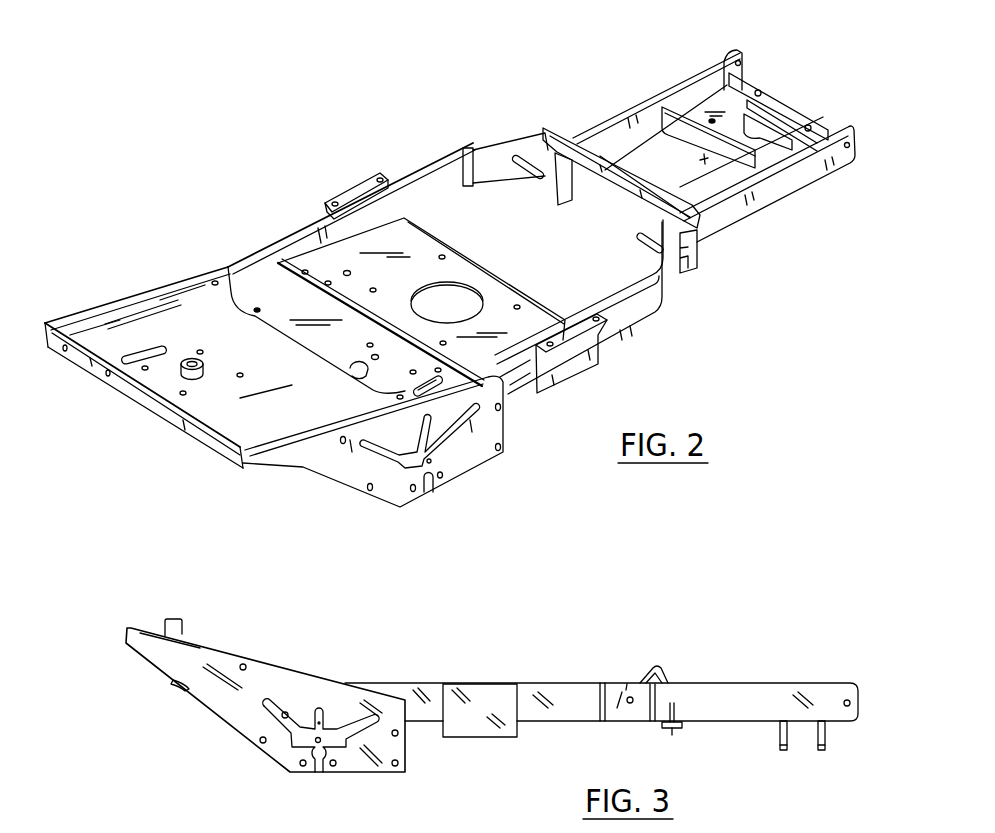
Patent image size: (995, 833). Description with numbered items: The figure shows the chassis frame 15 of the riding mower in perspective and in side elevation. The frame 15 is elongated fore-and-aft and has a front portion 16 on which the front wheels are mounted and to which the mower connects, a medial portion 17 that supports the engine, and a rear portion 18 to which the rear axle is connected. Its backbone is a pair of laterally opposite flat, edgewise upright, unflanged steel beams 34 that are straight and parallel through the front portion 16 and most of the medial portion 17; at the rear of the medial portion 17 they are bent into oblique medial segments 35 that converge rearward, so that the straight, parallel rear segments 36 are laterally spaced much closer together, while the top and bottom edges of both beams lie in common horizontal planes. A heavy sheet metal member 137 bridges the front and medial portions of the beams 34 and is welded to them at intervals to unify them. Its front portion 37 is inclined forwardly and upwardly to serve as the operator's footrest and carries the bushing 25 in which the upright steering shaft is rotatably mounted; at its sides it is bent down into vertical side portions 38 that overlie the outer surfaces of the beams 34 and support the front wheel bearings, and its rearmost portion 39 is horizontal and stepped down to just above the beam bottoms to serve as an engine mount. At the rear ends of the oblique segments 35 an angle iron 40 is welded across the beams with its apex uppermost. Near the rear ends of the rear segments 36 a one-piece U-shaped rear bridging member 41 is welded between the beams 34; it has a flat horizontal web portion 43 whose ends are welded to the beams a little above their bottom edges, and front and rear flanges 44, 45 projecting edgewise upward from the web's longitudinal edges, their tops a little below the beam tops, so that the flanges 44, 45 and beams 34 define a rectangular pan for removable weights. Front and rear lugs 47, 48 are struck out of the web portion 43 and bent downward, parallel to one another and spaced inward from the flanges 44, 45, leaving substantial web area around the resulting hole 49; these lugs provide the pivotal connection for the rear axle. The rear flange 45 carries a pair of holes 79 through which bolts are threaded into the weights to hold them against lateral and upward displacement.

In FIG. 2, the frame 15 is at (456, 150).
In FIG. 3, the frame 15 is at (547, 663).
In FIG. 2, the front portion 16 is at (145, 282).
In FIG. 2, the medial portion 17 is at (342, 183).
In FIG. 2, the rear portion 18 is at (654, 84).
In FIG. 2, the bushing 25 is at (205, 362).
In FIG. 3, the bushing 25 is at (162, 622).
In FIG. 2, the beams 34 is at (421, 165).
In FIG. 3, the beams 34 is at (423, 677).
In FIG. 2, the oblique medial segments 35 is at (538, 146).
In FIG. 3, the oblique medial segments 35 is at (617, 706).
In FIG. 2, the rear segments 36 is at (682, 78).
In FIG. 3, the rear segments 36 is at (877, 683).
In FIG. 2, the front portion of sheet metal member 37 is at (101, 322).
In FIG. 3, the front portion of sheet metal member 37 is at (210, 645).
In FIG. 2, the vertical side portions 38 is at (350, 468).
In FIG. 3, the vertical side portions 38 is at (237, 693).
In FIG. 2, the rearmost portion of sheet metal member 39 is at (417, 253).
In FIG. 2, the angle iron 40 is at (547, 131).
In FIG. 3, the angle iron 40 is at (648, 670).
In FIG. 2, the rear bridging member 41 is at (715, 157).
In FIG. 2, the web portion 43 is at (712, 112).
In FIG. 2, the front flange 44 is at (683, 138).
In FIG. 2, the rear flange 45 is at (754, 84).
In FIG. 3, the front lug 47 is at (782, 738).
In FIG. 3, the rear lug 48 is at (826, 743).
In FIG. 2, the hole 49 is at (783, 104).
In FIG. 2, the holes 79 is at (763, 95).
In FIG. 2, the sheet metal member 137 is at (183, 300).
In FIG. 3, the sheet metal member 137 is at (297, 662).